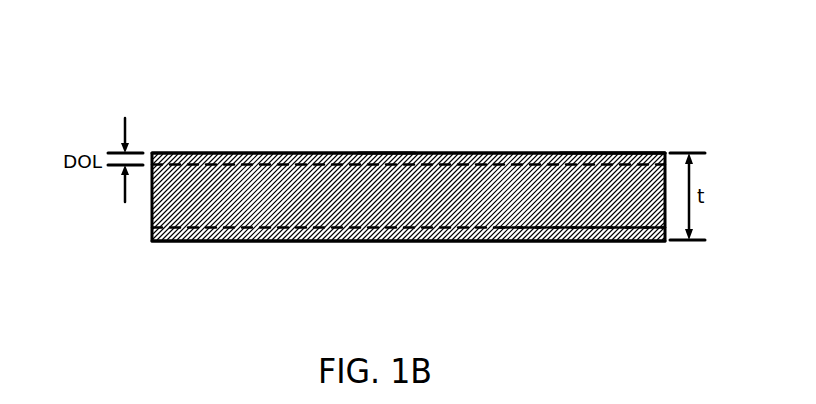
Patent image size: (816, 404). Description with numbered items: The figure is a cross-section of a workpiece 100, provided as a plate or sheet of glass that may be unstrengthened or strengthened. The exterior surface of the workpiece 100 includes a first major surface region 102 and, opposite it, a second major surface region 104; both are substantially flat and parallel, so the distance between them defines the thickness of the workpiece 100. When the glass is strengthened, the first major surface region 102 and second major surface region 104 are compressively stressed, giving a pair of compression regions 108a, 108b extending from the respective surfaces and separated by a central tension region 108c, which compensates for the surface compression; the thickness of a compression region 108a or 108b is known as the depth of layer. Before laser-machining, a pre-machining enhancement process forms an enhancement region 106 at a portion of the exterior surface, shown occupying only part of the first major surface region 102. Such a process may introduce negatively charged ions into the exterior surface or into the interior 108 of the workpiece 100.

The workpiece 100 is at (112, 71).
The first major surface region 102 is at (239, 146).
The second major surface region 104 is at (228, 248).
The enhancement region 106 is at (415, 146).
The interior 108 is at (583, 43).
The compression region 108a is at (608, 152).
The compression region 108b is at (557, 227).
The tension region 108c is at (502, 185).